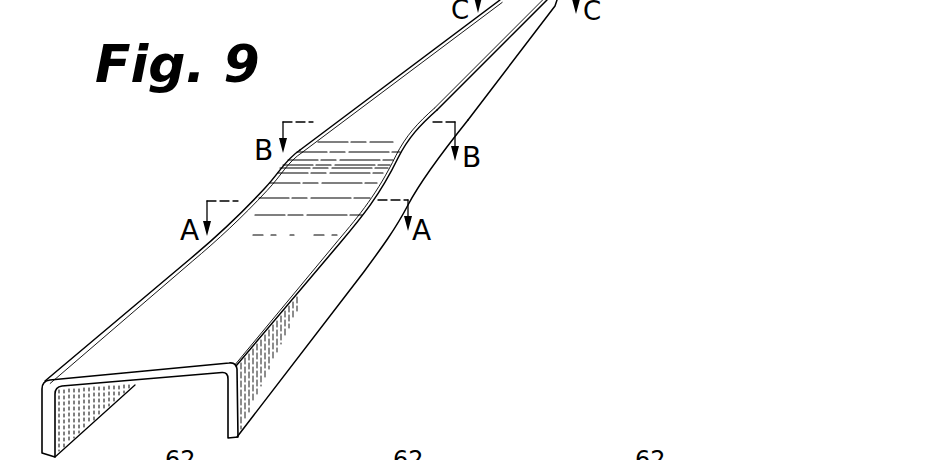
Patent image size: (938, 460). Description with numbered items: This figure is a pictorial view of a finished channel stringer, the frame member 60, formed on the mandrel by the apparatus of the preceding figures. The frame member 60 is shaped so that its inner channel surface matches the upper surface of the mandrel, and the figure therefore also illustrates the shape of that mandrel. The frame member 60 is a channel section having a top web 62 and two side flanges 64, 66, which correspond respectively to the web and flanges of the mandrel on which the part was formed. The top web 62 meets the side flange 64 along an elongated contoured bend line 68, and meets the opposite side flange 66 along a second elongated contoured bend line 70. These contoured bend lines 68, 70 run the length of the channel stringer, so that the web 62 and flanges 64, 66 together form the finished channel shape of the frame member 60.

The frame member 60 is at (301, 228).
The top web 62 is at (133, 337).
The side flange 64 is at (277, 353).
The side flange 66 is at (67, 422).
The elongated contoured bend line 68 is at (457, 88).
The elongated contoured bend line 70 is at (336, 119).